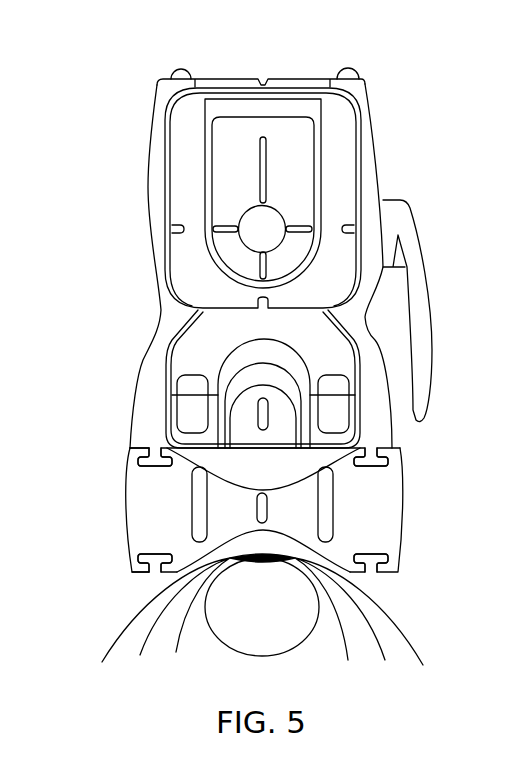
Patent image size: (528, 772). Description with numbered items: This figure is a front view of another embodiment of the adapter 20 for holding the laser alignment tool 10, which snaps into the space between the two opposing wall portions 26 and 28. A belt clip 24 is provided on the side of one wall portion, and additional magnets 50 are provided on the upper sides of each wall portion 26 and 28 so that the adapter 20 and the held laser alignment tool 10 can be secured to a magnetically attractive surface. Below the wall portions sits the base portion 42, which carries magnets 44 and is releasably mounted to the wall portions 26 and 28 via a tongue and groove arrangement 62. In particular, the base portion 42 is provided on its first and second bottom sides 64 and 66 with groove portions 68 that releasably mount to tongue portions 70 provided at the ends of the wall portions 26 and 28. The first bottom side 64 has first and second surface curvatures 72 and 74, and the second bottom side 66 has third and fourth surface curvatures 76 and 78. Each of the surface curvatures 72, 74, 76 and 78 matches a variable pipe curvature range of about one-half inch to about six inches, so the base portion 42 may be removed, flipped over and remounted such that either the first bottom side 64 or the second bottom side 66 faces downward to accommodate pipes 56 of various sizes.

The laser alignment tool 10 is at (240, 78).
The adapter 20 is at (144, 75).
The belt clip 24 is at (427, 280).
The wall portion 26 is at (147, 210).
The wall portion 28 is at (373, 127).
The base portion 42 is at (125, 497).
The magnets 44 is at (190, 510).
The magnets 50 is at (181, 70).
The pipe 56 is at (108, 646).
The tongue and groove arrangement 62 is at (122, 450).
The first bottom side 64 is at (130, 450).
The second bottom side 66 is at (137, 573).
The groove portions 68 is at (148, 571).
The tongue portions 70 is at (160, 460).
The first surface curvature 72 is at (324, 461).
The second surface curvature 74 is at (258, 491).
The third surface curvature 76 is at (229, 560).
The fourth surface curvature 78 is at (262, 533).